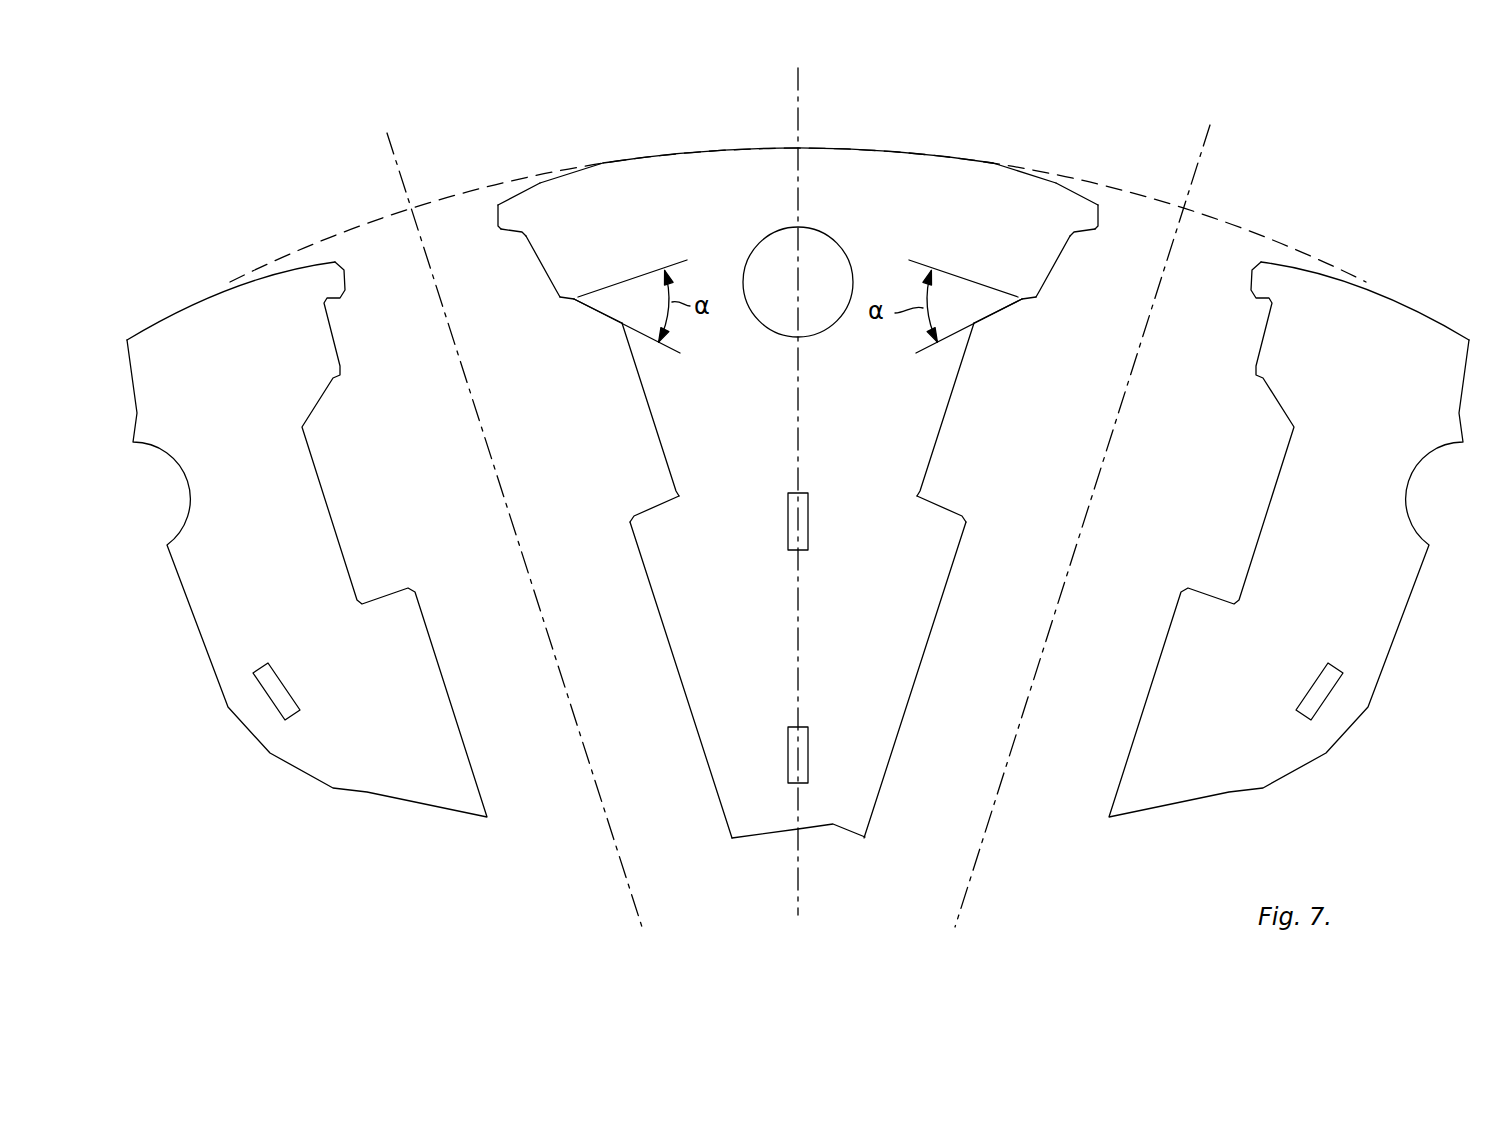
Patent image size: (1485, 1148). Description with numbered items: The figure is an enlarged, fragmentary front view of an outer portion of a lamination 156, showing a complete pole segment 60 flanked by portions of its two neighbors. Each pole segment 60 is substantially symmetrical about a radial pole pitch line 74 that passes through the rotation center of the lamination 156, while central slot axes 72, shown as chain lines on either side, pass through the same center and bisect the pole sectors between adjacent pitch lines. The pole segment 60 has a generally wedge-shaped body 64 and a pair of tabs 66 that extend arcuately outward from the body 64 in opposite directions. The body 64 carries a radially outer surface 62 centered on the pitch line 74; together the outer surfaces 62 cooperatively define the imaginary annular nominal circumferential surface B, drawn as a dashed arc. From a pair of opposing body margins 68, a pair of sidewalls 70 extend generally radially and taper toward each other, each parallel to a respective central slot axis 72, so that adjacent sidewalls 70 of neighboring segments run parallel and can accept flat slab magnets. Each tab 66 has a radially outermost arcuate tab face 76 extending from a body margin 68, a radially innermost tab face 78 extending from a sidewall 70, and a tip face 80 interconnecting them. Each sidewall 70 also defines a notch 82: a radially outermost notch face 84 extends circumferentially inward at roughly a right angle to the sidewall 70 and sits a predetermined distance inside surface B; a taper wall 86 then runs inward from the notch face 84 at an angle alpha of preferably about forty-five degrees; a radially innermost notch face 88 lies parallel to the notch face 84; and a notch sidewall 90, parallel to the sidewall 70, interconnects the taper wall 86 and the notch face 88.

The pole segment 60 is at (228, 327).
The radially outer surface 62 is at (178, 312).
The body 64 is at (718, 728).
The tab 66 is at (506, 214).
The body margin 68 is at (610, 160).
The sidewall 70 is at (546, 277).
The central slot axis 72 is at (388, 135).
The radial pole pitch line 74 is at (798, 90).
The radially outermost arcuate tab face 76 is at (543, 183).
The radially innermost tab face 78 is at (525, 250).
The tip face 80 is at (502, 230).
The notch 82 is at (647, 453).
The radially outermost notch face 84 is at (568, 310).
The taper wall 86 is at (604, 316).
The radially innermost notch face 88 is at (646, 507).
The notch sidewall 90 is at (648, 405).
The lamination 156 is at (1368, 112).
The annular nominal circumferential surface B is at (398, 208).